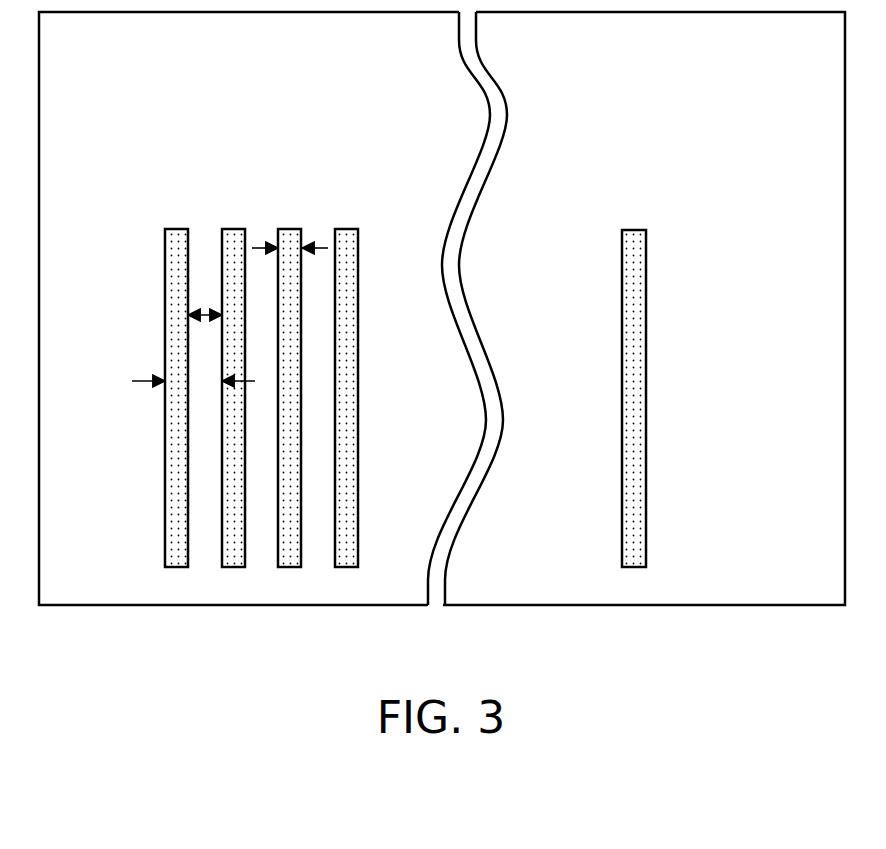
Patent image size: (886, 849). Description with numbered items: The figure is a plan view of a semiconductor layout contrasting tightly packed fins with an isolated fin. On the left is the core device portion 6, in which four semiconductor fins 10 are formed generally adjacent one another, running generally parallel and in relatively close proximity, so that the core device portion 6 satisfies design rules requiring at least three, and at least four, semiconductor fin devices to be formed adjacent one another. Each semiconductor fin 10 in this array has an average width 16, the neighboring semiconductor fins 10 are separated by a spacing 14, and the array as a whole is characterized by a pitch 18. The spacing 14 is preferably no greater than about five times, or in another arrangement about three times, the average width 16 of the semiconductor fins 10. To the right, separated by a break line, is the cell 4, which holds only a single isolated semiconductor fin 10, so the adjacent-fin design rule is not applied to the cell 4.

The cell 4 is at (656, 89).
The core device portion 6 is at (241, 88).
The semiconductor fin 10 is at (176, 229).
The spacing 14 is at (208, 313).
The average width 16 is at (258, 246).
The pitch 18 is at (145, 384).